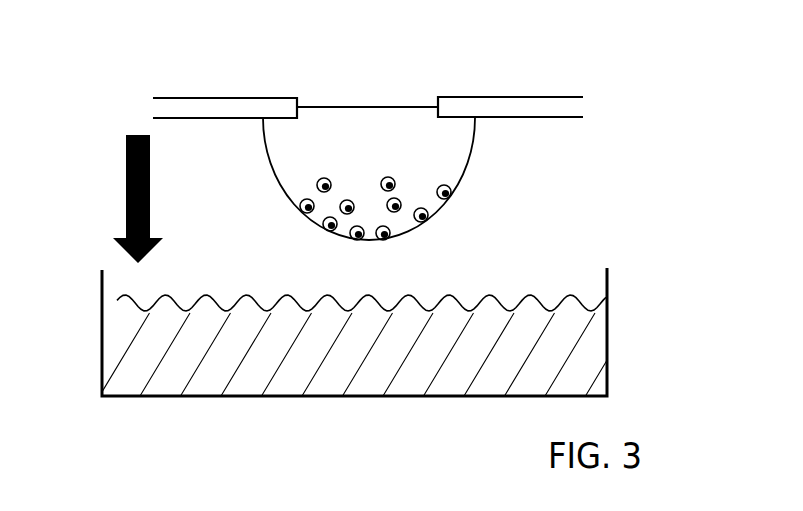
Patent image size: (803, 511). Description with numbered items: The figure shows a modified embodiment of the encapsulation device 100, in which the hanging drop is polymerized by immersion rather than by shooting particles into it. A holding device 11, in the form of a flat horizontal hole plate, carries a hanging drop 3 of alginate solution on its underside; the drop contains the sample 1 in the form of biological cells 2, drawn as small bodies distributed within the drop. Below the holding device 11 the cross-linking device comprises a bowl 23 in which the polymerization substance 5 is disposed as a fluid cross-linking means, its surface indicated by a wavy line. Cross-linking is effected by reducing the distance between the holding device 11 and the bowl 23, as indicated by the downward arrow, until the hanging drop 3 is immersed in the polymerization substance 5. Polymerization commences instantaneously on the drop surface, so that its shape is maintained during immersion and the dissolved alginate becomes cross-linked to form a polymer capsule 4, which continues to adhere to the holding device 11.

The encapsulation device 100 is at (624, 96).
The holding device 11 is at (227, 108).
The hanging drop 3 is at (450, 155).
The polymer capsule 4 is at (369, 179).
The sample 1 is at (305, 207).
The biological cells 2 is at (375, 208).
The bowl 23 is at (610, 340).
The polymerization substance 5 is at (138, 357).